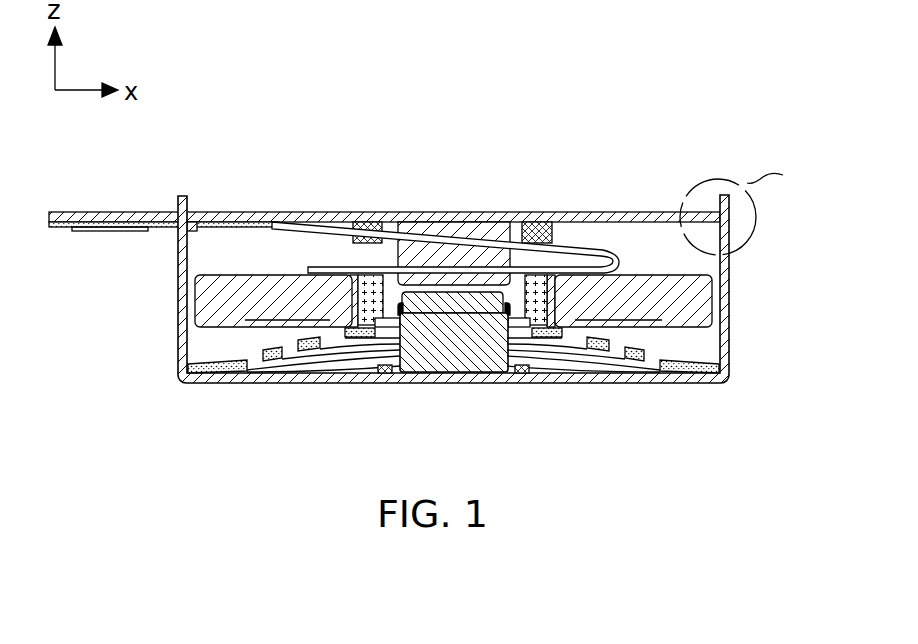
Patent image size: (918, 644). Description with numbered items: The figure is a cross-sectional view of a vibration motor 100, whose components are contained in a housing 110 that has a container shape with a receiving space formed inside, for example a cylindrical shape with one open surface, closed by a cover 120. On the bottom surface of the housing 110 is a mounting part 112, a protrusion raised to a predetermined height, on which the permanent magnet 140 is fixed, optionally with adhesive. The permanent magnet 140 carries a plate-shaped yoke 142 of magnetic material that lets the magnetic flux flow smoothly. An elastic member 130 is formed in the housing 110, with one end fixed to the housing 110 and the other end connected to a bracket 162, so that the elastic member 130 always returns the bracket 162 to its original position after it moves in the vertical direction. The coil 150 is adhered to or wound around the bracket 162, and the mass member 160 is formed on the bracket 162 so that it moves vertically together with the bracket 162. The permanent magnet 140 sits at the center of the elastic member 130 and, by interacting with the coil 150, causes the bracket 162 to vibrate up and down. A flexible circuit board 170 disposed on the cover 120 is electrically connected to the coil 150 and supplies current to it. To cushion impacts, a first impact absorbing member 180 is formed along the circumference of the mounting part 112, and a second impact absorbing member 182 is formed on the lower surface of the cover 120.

The vibration motor 100 is at (678, 155).
The housing 110 is at (730, 268).
The mounting part 112 is at (485, 377).
The cover 120 is at (296, 212).
The elastic member 130 is at (204, 383).
The permanent magnet 140 is at (438, 372).
The yoke 142 is at (510, 303).
The coil 150 is at (525, 275).
The mass member 160 is at (700, 312).
The bracket 162 is at (560, 325).
The circuit board 170 is at (607, 231).
The first impact absorbing member 180 is at (377, 375).
The second impact absorbing member 182 is at (548, 222).